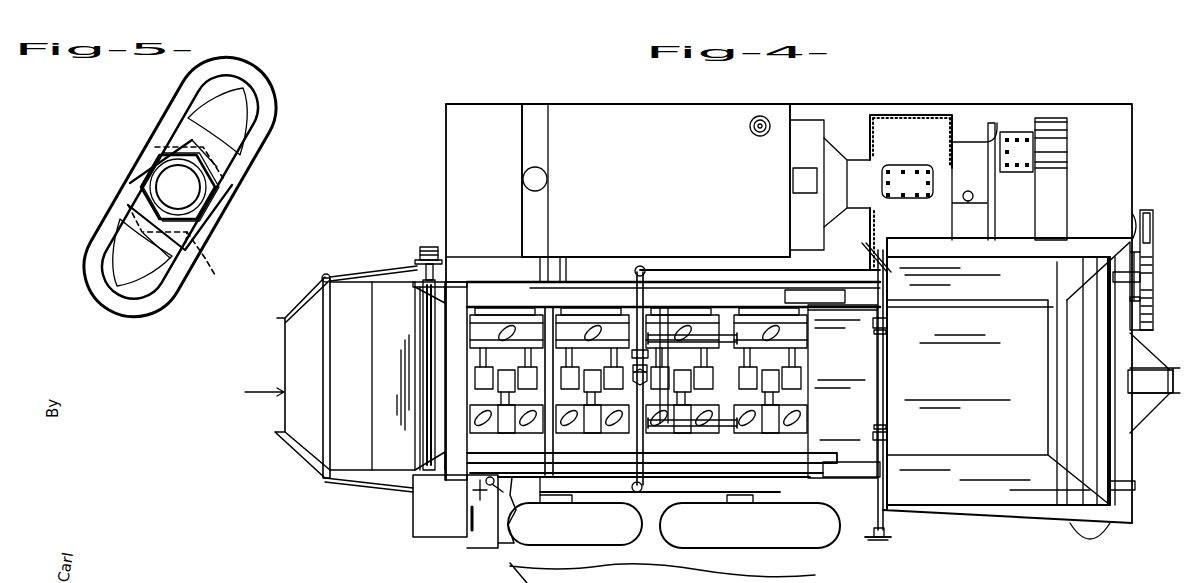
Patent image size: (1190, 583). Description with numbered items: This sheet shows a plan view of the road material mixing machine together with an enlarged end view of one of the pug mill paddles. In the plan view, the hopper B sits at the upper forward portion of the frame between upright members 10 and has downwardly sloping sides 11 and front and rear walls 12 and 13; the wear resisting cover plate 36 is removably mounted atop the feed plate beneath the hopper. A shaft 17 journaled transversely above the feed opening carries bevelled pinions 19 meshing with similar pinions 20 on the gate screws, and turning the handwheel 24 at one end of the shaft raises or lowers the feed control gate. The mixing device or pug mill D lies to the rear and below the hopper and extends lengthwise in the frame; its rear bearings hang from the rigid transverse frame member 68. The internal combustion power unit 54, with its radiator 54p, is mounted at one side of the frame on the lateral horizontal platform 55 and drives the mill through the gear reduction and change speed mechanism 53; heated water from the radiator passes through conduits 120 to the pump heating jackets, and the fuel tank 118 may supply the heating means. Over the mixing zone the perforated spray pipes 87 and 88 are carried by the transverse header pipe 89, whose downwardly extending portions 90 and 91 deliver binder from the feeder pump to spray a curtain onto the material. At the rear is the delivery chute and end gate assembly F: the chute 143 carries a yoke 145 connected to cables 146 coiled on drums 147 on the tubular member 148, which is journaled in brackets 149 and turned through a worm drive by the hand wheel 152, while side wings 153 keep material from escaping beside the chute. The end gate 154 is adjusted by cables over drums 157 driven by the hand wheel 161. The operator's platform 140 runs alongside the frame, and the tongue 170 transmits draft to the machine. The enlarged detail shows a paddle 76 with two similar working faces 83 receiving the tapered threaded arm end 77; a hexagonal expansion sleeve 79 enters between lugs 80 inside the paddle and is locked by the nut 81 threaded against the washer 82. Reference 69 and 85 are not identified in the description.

In FIG. 5, the paddle members or blades 76 is at (152, 103).
In FIG. 5, the tapered and screw threaded outer ends of the arms 77 is at (160, 190).
In FIG. 5, the hexagonal expansion sleeve or socket member 79 is at (208, 272).
In FIG. 5, the lugs 80 is at (193, 126).
In FIG. 5, the nut 81 is at (215, 194).
In FIG. 5, the washer 82 is at (235, 158).
In FIG. 5, the working faces 83 is at (272, 135).
In FIG. 4, the upright members 10 is at (1120, 270).
In FIG. 4, the downwardly sloping sides 11 is at (1010, 295).
In FIG. 4, the front wall 12 is at (1100, 365).
In FIG. 4, the rear wall 13 is at (882, 355).
In FIG. 4, the shaft 17 is at (876, 508).
In FIG. 4, the bevelled pinions 19 is at (872, 331).
In FIG. 4, the pinions 20 is at (871, 322).
In FIG. 4, the handwheel 24 is at (879, 539).
In FIG. 4, the wear resisting cover plate 36 is at (1040, 390).
In FIG. 4, the gear reduction and change speed mechanism 53 is at (885, 226).
In FIG. 4, the power unit 54 is at (668, 118).
In FIG. 4, the radiator 54p is at (538, 115).
In FIG. 4, the lateral horizontal platform 55 is at (500, 98).
In FIG. 4, the rigid transverse frame member 68 is at (478, 300).
In FIG. 4, the tool module assembly 69 is at (800, 418).
In FIG. 4, the mounting plate 85 is at (843, 297).
In FIG. 4, the perforated spray pipe 87 is at (690, 440).
In FIG. 4, the perforated spray pipe 88 is at (690, 350).
In FIG. 4, the header pipe 89 is at (640, 298).
In FIG. 4, the downwardly extending portion 90 is at (640, 492).
In FIG. 4, the downwardly extending portion 91 is at (645, 270).
In FIG. 4, the fuel tank 118 is at (1100, 535).
In FIG. 4, the conduits 120 is at (568, 272).
In FIG. 4, the operator's platform 140 is at (486, 540).
In FIG. 4, the chute 143 is at (284, 350).
In FIG. 4, the yoke 145 is at (326, 334).
In FIG. 4, the cables 146 is at (370, 270).
In FIG. 4, the drums 147 is at (418, 262).
In FIG. 4, the tubular member 148 is at (425, 332).
In FIG. 4, the brackets 149 is at (452, 278).
In FIG. 4, the hand wheel 152 is at (481, 500).
In FIG. 4, the side wings 153 is at (415, 290).
In FIG. 4, the end gate 154 is at (385, 390).
In FIG. 4, the drums 157 is at (430, 246).
In FIG. 4, the hand wheel 161 is at (474, 525).
In FIG. 4, the tongue 170 is at (1158, 398).
In FIG. 4, the hopper B is at (1010, 500).
In FIG. 4, the mixing device or pug mill D is at (715, 470).
In FIG. 4, the combination delivery chute and end gate assembly F is at (258, 393).